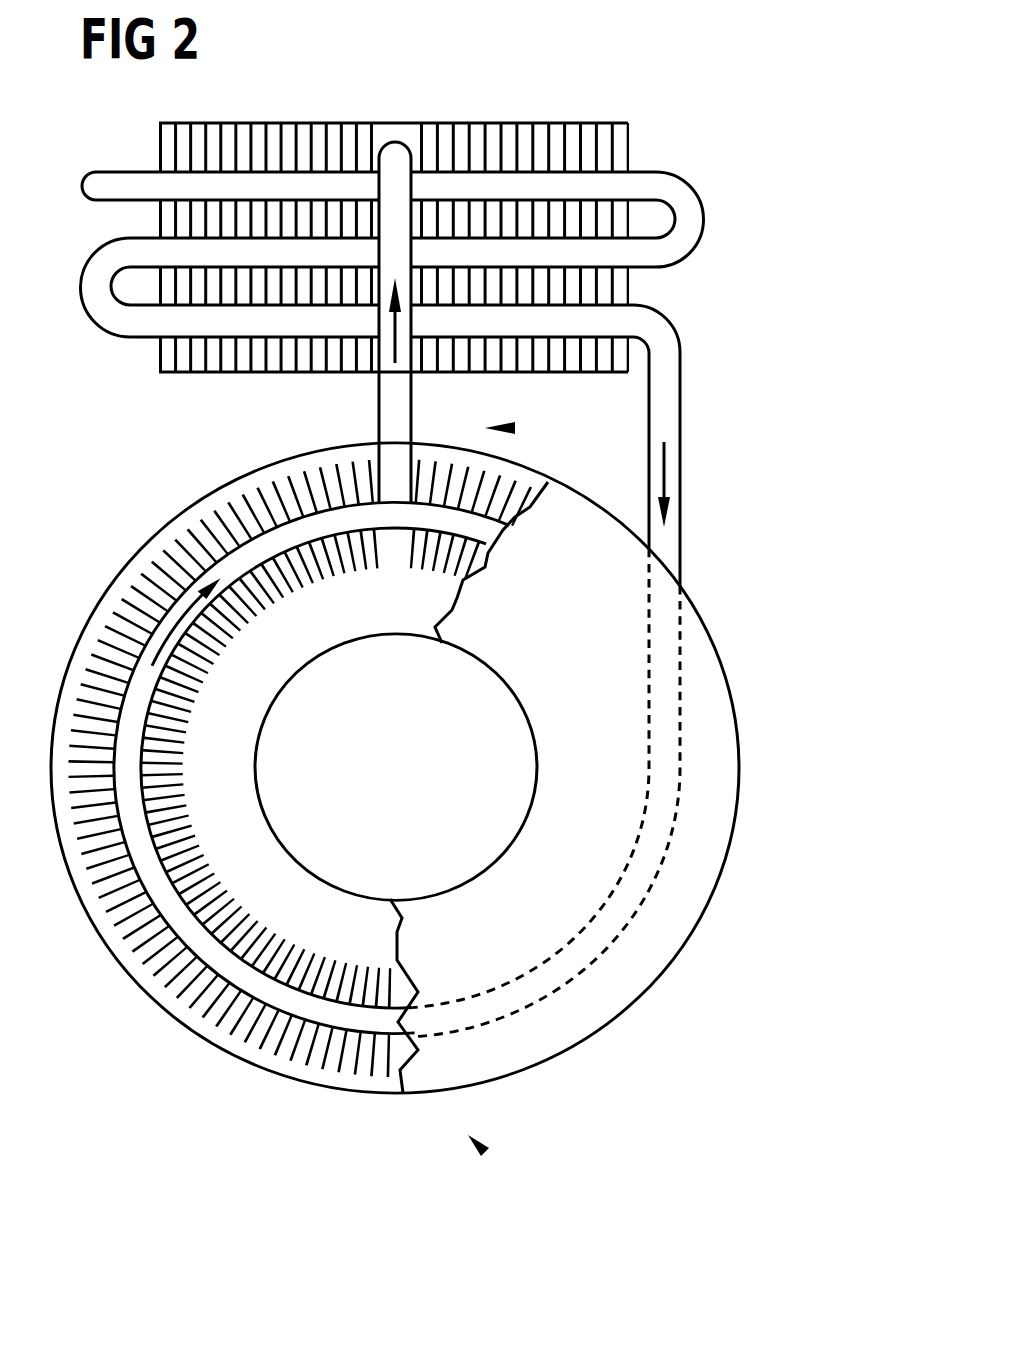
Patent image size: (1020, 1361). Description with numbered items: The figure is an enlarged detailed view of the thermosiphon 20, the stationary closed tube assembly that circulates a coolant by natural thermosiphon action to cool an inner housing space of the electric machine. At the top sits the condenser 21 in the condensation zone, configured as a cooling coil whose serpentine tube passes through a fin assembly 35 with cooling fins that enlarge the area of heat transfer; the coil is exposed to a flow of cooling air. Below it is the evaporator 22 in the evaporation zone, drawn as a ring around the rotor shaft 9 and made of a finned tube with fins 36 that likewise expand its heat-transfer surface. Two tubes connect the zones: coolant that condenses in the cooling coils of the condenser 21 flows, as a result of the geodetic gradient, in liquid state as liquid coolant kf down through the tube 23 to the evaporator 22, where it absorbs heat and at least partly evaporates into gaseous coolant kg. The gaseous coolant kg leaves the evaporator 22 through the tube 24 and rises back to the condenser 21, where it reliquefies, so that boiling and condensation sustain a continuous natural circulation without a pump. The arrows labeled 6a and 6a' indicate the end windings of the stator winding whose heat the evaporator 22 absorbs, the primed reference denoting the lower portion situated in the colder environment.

The rotor shaft 9 is at (522, 779).
The thermosiphon 20 is at (753, 1030).
The condenser 21 is at (697, 227).
The evaporator 22 is at (278, 1000).
The tube 23 is at (668, 390).
The tube 24 is at (412, 416).
The fin assembly 35 is at (627, 150).
The fins 36 is at (247, 510).
The gaseous coolant kg is at (387, 344).
The liquid coolant kf is at (665, 473).
The end winding 6a is at (554, 432).
The end winding 6a' is at (517, 1184).